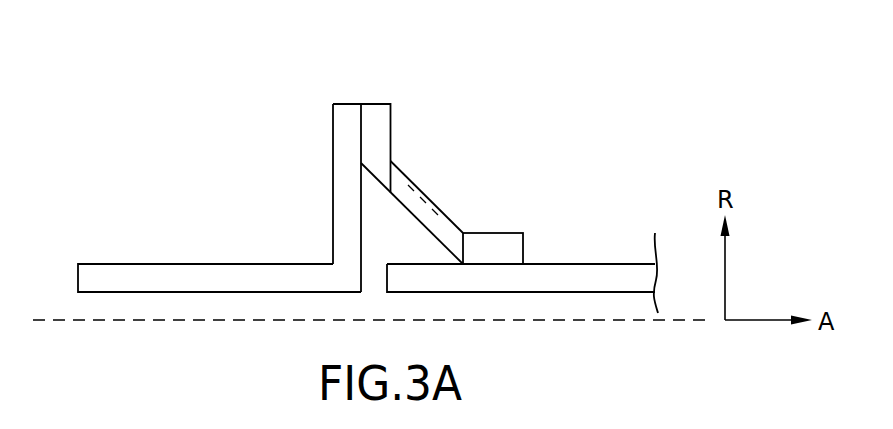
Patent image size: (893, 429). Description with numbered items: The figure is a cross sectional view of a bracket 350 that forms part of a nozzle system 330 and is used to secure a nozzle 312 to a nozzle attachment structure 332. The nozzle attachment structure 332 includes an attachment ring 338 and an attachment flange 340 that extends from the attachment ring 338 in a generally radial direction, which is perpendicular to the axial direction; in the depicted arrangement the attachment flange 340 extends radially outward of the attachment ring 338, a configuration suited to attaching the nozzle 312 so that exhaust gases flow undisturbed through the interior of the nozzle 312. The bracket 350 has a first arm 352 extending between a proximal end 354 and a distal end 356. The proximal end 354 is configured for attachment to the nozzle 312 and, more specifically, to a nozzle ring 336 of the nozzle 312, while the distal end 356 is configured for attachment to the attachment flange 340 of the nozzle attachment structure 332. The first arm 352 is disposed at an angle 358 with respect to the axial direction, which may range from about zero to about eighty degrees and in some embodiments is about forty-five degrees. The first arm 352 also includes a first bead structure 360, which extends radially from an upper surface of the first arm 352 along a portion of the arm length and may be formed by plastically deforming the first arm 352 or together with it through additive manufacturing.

The nozzle 312 is at (587, 277).
The nozzle system 330 is at (200, 103).
The nozzle attachment structure 332 is at (128, 277).
The nozzle ring 336 is at (548, 278).
The attachment ring 338 is at (208, 273).
The attachment flange 340 is at (343, 150).
The bracket 350 is at (512, 112).
The first arm 352 is at (392, 168).
The proximal end 354 is at (490, 247).
The distal end 356 is at (375, 117).
The angle 358 is at (400, 264).
The first bead structure 360 is at (442, 208).